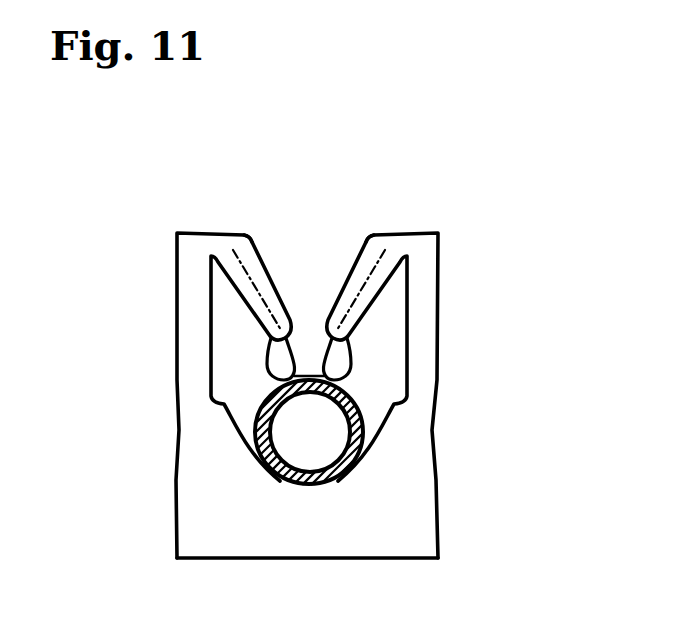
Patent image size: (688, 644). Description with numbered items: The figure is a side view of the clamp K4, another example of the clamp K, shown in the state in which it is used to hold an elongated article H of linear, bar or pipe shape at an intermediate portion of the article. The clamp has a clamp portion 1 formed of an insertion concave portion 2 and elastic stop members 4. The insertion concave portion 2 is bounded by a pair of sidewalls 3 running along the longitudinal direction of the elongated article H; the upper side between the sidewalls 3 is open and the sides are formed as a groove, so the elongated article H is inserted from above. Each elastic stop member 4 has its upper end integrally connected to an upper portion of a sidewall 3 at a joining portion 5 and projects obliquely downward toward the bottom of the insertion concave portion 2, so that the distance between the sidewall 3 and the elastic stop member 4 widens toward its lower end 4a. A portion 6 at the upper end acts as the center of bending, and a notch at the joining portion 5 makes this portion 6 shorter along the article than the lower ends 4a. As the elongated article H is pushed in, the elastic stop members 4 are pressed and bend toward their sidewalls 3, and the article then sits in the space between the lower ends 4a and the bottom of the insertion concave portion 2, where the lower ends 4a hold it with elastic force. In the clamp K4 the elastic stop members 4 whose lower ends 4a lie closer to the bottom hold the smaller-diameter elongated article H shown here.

The clamp portion 1 is at (307, 236).
The insertion concave portion 2 is at (334, 501).
The sidewall 3 is at (301, 287).
The elastic stop member 4 is at (266, 275).
The lower end of elastic stop member 4a is at (268, 358).
The joining portion 5 is at (309, 172).
The bending center portion 6 is at (248, 238).
The clamp K is at (369, 348).
The clamp K4 is at (457, 224).
The elongated article H is at (301, 486).